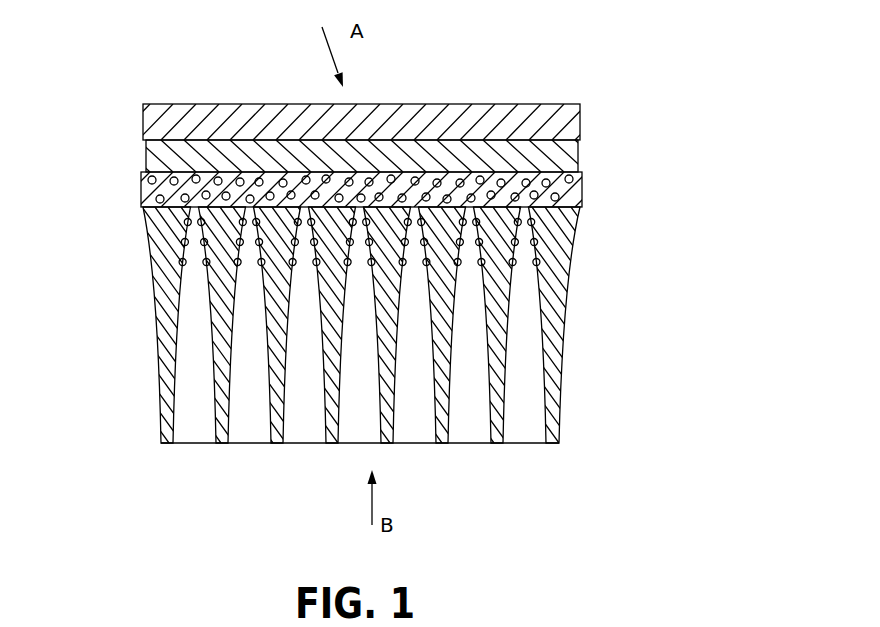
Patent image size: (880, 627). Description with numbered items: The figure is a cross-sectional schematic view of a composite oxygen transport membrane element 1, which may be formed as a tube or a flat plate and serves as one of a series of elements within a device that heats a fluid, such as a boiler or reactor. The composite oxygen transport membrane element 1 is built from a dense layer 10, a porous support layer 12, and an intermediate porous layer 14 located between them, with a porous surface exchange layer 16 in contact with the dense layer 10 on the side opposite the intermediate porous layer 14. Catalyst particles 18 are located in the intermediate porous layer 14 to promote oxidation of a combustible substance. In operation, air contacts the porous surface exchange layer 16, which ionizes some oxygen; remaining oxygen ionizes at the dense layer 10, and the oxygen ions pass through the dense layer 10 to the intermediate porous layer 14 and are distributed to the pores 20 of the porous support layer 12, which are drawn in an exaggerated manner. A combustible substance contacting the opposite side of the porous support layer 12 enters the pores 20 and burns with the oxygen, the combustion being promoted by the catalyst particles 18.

The composite oxygen transport membrane element 1 is at (379, 274).
The dense layer 10 is at (578, 159).
The porous support layer 12 is at (567, 272).
The intermediate porous layer 14 is at (583, 194).
The porous surface exchange layer 16 is at (572, 104).
The catalyst particles 18 is at (203, 199).
The pores 20 is at (337, 423).